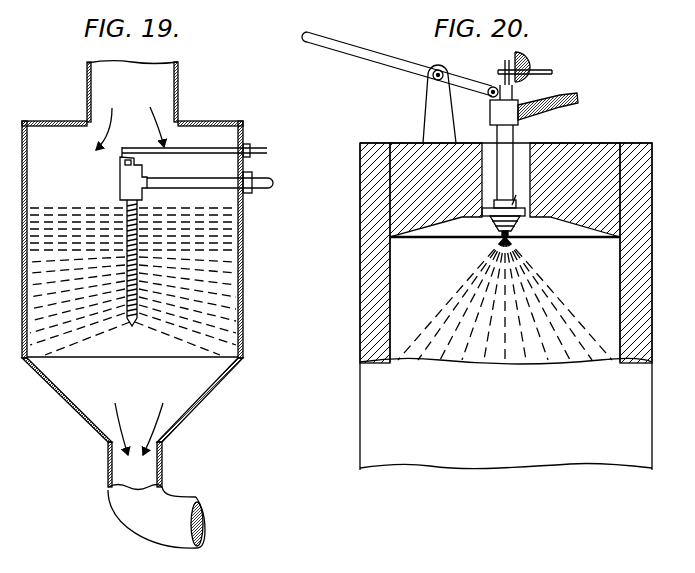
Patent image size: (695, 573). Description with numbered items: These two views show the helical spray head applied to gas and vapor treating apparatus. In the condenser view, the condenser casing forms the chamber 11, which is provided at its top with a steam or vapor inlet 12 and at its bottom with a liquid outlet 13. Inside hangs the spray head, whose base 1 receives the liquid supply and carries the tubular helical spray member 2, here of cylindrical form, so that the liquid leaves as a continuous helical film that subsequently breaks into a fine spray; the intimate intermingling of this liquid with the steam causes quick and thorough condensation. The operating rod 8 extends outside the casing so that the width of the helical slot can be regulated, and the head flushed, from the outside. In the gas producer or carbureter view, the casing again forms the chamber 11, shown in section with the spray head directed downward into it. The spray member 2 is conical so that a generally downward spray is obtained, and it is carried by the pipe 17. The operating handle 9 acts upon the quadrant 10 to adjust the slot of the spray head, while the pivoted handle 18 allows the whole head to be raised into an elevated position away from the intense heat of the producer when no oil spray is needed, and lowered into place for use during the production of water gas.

In FIG. 19, the base 1 is at (143, 176).
In FIG. 20, the base 1 is at (517, 192).
In FIG. 19, the spray member 2 is at (126, 212).
In FIG. 19, the operating rod 8 is at (225, 150).
In FIG. 20, the operating handle 9 is at (550, 75).
In FIG. 20, the quadrant 10 is at (528, 61).
In FIG. 19, the chamber 11 is at (244, 248).
In FIG. 20, the chamber 11 is at (360, 301).
In FIG. 19, the gas inlet 12 is at (178, 78).
In FIG. 19, the gas outlet 13 is at (163, 467).
In FIG. 20, the pipe 17 is at (493, 118).
In FIG. 20, the handle 18 is at (382, 58).